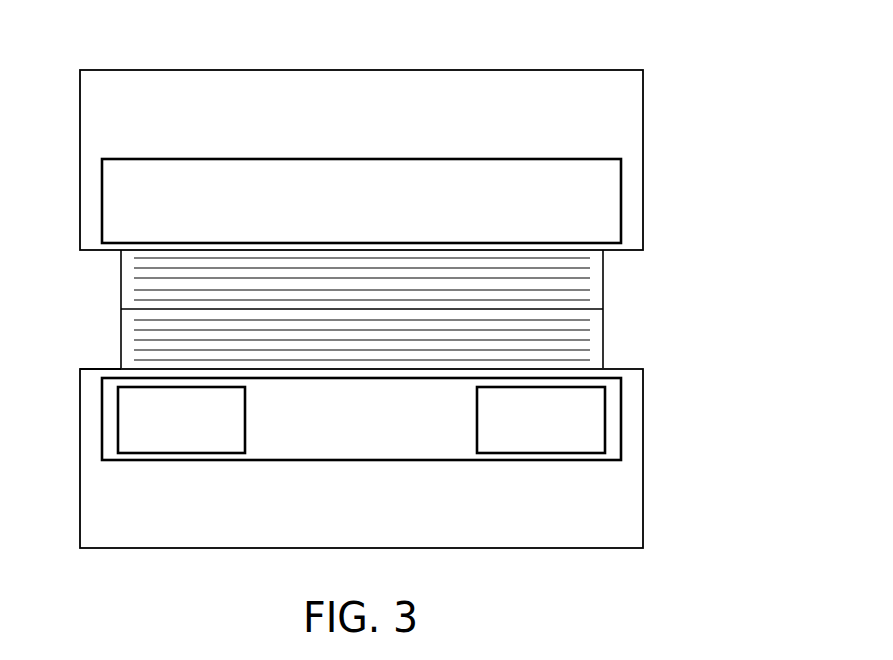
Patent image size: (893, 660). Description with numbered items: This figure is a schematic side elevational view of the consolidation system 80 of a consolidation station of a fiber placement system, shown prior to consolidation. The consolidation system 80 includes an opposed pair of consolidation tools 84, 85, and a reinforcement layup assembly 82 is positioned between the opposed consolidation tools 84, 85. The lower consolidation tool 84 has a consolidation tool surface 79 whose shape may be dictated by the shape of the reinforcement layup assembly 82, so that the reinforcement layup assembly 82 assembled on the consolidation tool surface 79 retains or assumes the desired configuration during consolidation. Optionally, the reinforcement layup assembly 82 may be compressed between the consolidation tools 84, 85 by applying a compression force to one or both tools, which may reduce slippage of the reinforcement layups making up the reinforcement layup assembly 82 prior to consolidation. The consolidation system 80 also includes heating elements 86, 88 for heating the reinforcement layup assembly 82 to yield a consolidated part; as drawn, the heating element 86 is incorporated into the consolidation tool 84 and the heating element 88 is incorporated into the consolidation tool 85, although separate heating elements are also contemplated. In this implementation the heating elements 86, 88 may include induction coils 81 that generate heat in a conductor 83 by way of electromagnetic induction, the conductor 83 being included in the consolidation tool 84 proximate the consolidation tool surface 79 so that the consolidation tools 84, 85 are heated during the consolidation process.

The consolidation system 80 is at (675, 88).
The consolidation tool 85 is at (643, 163).
The heating element 88 is at (621, 210).
The reinforcement layup assembly 82 is at (604, 250).
The consolidation tool surface 79 is at (88, 366).
The consolidation tool 84 is at (643, 457).
The heating element 86 is at (621, 407).
The conductor 83 is at (182, 455).
The induction coil 81 is at (547, 455).